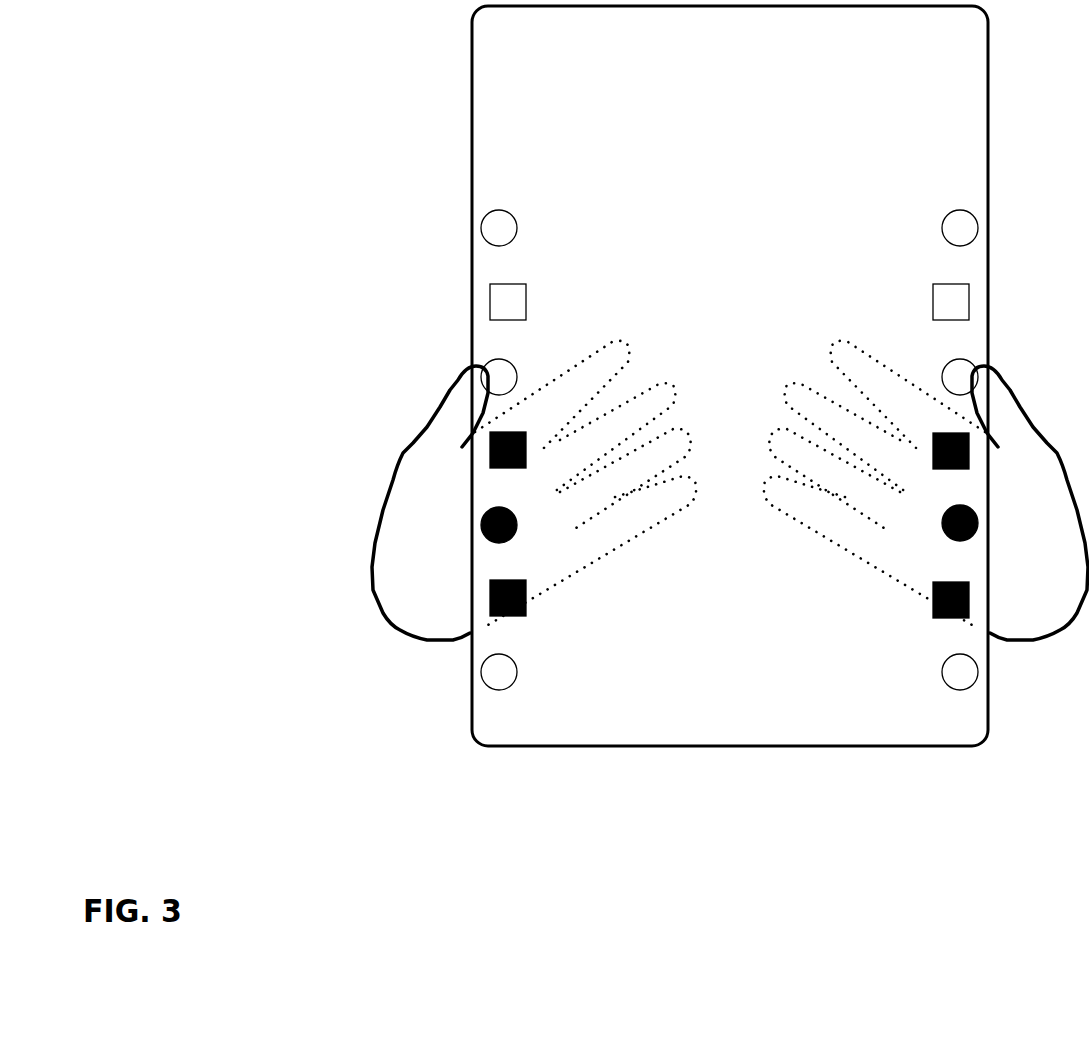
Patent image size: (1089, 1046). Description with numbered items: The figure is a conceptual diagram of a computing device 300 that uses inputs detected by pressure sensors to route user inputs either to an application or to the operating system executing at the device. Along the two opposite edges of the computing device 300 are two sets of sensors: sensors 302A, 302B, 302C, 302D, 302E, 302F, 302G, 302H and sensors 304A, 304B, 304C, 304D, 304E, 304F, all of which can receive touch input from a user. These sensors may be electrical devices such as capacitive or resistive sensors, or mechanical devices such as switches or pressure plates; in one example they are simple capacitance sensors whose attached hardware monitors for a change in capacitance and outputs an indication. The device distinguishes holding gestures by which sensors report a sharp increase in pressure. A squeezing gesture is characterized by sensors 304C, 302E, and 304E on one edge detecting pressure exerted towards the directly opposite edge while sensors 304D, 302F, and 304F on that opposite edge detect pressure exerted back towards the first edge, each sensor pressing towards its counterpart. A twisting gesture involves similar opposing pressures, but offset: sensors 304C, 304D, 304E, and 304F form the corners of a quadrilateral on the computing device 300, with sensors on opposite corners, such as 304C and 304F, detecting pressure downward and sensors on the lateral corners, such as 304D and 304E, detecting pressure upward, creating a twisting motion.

The computing device 300 is at (710, 70).
The sensor 302A is at (500, 210).
The sensor 302B is at (960, 210).
The sensor 302C is at (500, 358).
The sensor 302D is at (960, 358).
The sensor 302E is at (517, 520).
The sensor 302F is at (943, 518).
The sensor 302G is at (500, 653).
The sensor 302H is at (960, 653).
The sensor 304A is at (520, 284).
The sensor 304B is at (935, 284).
The sensor 304C is at (520, 432).
The sensor 304D is at (945, 433).
The sensor 304E is at (500, 580).
The sensor 304F is at (960, 582).